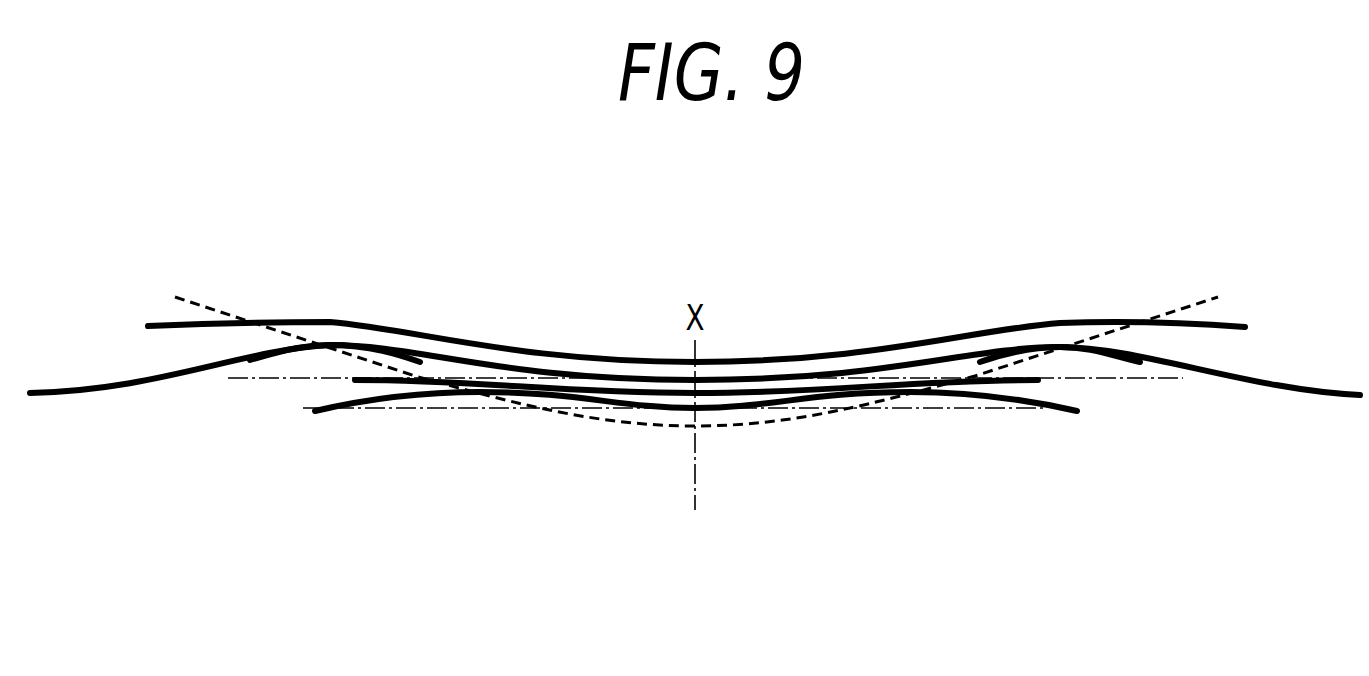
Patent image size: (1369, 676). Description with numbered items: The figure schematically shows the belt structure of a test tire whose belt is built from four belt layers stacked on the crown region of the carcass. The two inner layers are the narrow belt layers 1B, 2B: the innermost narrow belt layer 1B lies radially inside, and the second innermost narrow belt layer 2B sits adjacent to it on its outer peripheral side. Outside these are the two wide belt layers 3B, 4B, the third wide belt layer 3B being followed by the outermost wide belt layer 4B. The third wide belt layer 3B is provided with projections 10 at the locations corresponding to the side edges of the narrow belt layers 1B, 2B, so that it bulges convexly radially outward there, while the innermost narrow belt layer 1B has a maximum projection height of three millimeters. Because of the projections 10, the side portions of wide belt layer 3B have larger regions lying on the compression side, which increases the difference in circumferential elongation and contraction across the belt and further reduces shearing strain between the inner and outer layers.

The innermost narrow belt layer 1B is at (510, 405).
The second innermost narrow belt layer 2B is at (405, 382).
The third wide belt layer 3B is at (240, 367).
The outermost wide belt layer 4B is at (173, 330).
The projections 10 is at (337, 345).